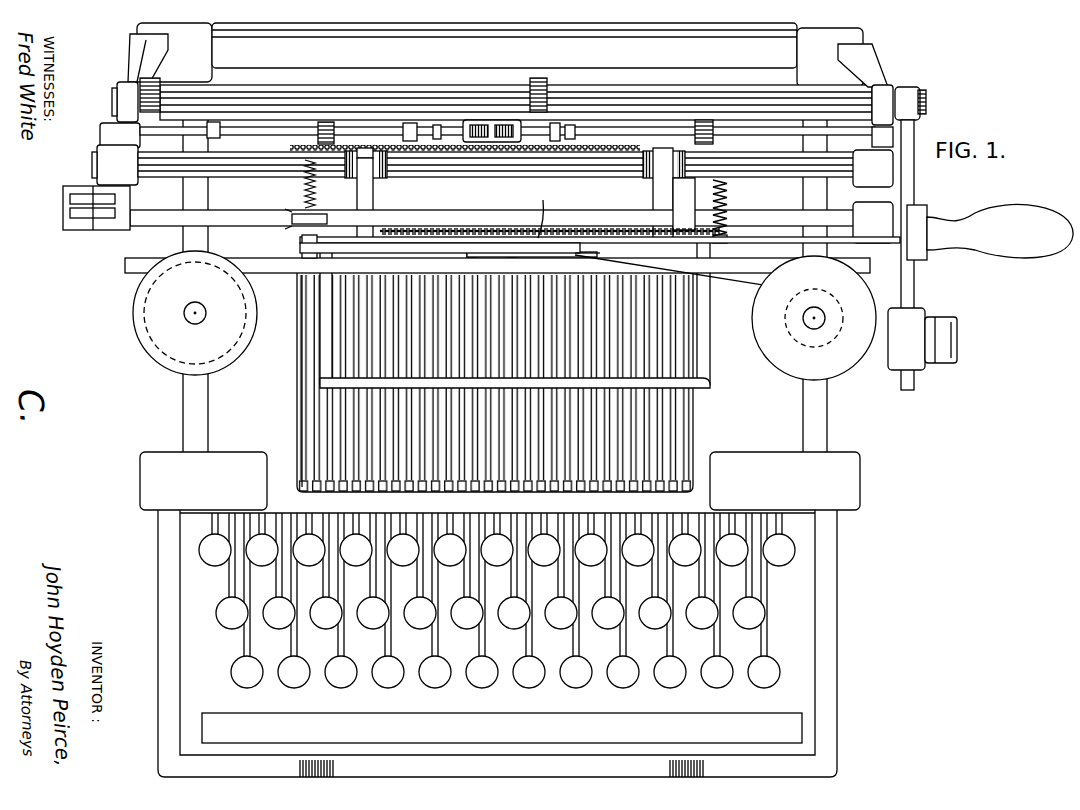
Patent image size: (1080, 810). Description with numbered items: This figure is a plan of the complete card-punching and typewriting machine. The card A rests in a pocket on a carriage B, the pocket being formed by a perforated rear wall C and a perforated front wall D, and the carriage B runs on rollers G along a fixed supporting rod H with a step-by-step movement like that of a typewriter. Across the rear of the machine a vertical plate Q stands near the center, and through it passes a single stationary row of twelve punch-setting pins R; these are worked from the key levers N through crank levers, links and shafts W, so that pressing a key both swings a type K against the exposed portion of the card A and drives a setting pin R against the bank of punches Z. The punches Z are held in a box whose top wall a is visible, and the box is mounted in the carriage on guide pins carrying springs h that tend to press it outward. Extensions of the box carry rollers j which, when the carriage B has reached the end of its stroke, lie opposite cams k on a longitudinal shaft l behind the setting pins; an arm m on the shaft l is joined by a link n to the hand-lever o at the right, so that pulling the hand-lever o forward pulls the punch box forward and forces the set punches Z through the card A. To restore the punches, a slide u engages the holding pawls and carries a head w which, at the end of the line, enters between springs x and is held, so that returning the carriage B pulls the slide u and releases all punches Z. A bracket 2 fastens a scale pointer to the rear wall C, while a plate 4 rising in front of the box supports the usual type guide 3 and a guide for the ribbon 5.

The cam k is at (135, 80).
The shaft l is at (242, 98).
The roller j is at (325, 123).
The shaft W is at (600, 130).
The arm m is at (922, 106).
The springs x is at (135, 206).
The head w is at (300, 210).
The slide u is at (328, 208).
The rollers G is at (373, 182).
The punch-setting pins R is at (478, 137).
The fixed supporting rod H is at (495, 167).
The top wall a is at (507, 142).
The vertical plate Q is at (541, 207).
The rear wall C is at (563, 200).
The carriage B is at (683, 204).
The springs h is at (725, 207).
The punches Z is at (457, 229).
The front wall D is at (382, 247).
The card A is at (420, 247).
The guide 3 is at (500, 388).
The plate 4 is at (566, 254).
The ribbon 5 is at (700, 268).
The link n is at (905, 263).
The hand-lever o is at (922, 322).
The bracket 2 is at (322, 335).
The types K is at (692, 488).
The key levers N is at (760, 650).